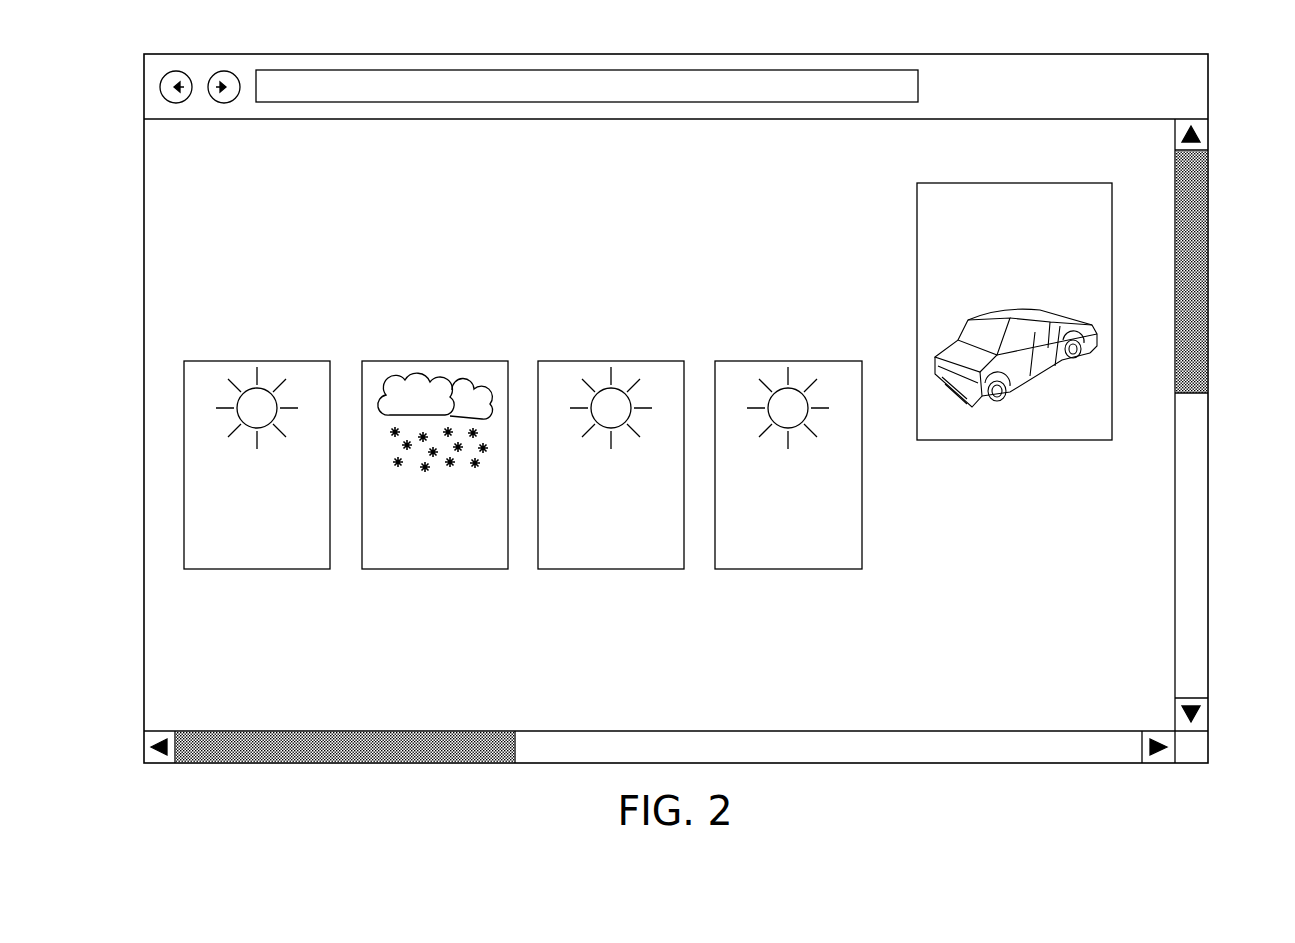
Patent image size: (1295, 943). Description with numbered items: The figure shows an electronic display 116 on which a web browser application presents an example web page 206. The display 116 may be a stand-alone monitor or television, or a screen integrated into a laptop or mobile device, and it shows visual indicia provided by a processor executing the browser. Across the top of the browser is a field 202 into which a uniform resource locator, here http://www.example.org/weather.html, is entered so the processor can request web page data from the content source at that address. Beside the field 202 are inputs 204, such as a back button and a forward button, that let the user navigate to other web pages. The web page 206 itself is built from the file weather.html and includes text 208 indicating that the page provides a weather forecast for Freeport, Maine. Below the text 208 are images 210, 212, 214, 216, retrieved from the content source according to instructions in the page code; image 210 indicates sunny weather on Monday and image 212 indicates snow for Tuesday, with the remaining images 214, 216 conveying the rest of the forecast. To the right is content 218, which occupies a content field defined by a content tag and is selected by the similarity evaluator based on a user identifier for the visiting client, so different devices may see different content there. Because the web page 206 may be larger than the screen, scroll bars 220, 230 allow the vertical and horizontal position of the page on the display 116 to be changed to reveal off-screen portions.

The electronic display 116 is at (143, 237).
The field 202 is at (380, 70).
The inputs 204 is at (176, 71).
The web page 206 is at (602, 375).
The text 208 is at (530, 199).
The image 210 is at (302, 362).
The image 212 is at (482, 362).
The image 214 is at (658, 362).
The image 216 is at (835, 362).
The content 218 is at (1098, 200).
The scroll bar 220 is at (1210, 253).
The scroll bar 230 is at (302, 765).